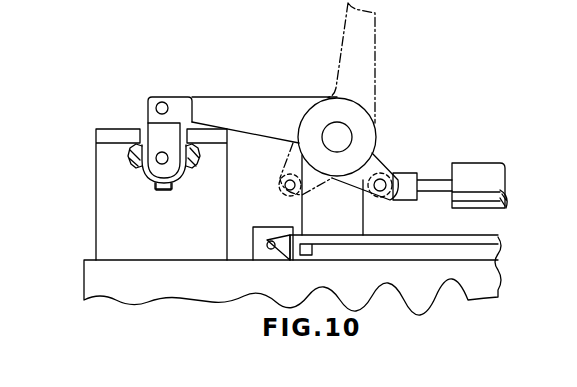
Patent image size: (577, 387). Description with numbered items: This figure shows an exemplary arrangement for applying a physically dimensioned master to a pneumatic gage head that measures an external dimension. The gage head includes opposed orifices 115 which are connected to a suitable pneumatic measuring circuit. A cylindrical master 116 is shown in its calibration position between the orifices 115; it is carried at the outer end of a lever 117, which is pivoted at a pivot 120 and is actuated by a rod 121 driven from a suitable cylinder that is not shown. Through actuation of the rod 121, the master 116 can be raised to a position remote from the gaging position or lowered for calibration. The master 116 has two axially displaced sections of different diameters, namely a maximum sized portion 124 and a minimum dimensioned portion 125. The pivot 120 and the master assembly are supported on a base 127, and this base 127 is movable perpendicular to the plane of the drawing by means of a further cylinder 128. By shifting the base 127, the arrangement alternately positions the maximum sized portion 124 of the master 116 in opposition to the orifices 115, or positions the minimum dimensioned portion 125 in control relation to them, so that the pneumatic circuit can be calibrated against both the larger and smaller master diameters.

The opposed orifices 115 is at (134, 155).
The cylindrical master 116 is at (184, 122).
The lever 117 is at (254, 106).
The pivot 120 is at (343, 138).
The rod 121 is at (487, 176).
The maximum sized portion 124 is at (185, 178).
The minimum dimensioned portion 125 is at (163, 188).
The base 127 is at (410, 240).
The further cylinder 128 is at (268, 250).